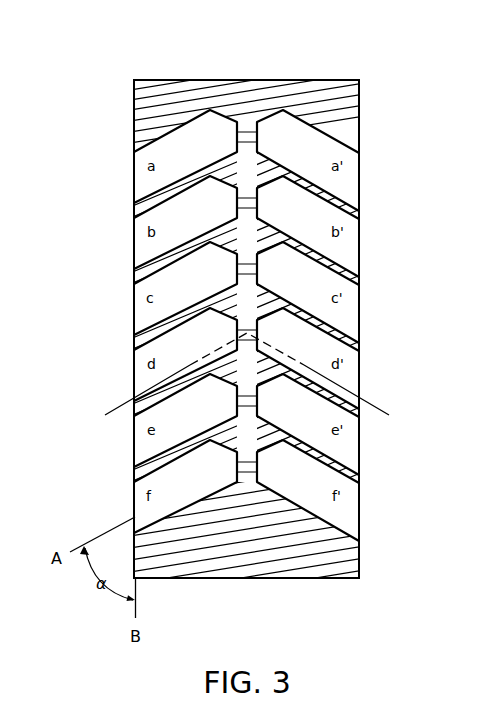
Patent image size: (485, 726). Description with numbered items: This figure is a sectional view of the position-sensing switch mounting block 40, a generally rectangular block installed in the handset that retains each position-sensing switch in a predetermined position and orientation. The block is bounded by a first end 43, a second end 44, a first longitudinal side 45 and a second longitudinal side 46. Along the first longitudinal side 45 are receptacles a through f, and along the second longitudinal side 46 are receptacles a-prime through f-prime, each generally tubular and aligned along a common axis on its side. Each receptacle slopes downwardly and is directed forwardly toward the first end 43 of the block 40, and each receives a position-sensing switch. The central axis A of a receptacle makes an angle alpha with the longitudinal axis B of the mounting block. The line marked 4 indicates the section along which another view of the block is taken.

The position-sensing switch mounting block 40 is at (312, 80).
The first end 43 is at (190, 67).
The second end 44 is at (333, 586).
The first longitudinal side 45 is at (118, 296).
The second longitudinal side 46 is at (369, 256).
The section line 4- 4 is at (244, 380).